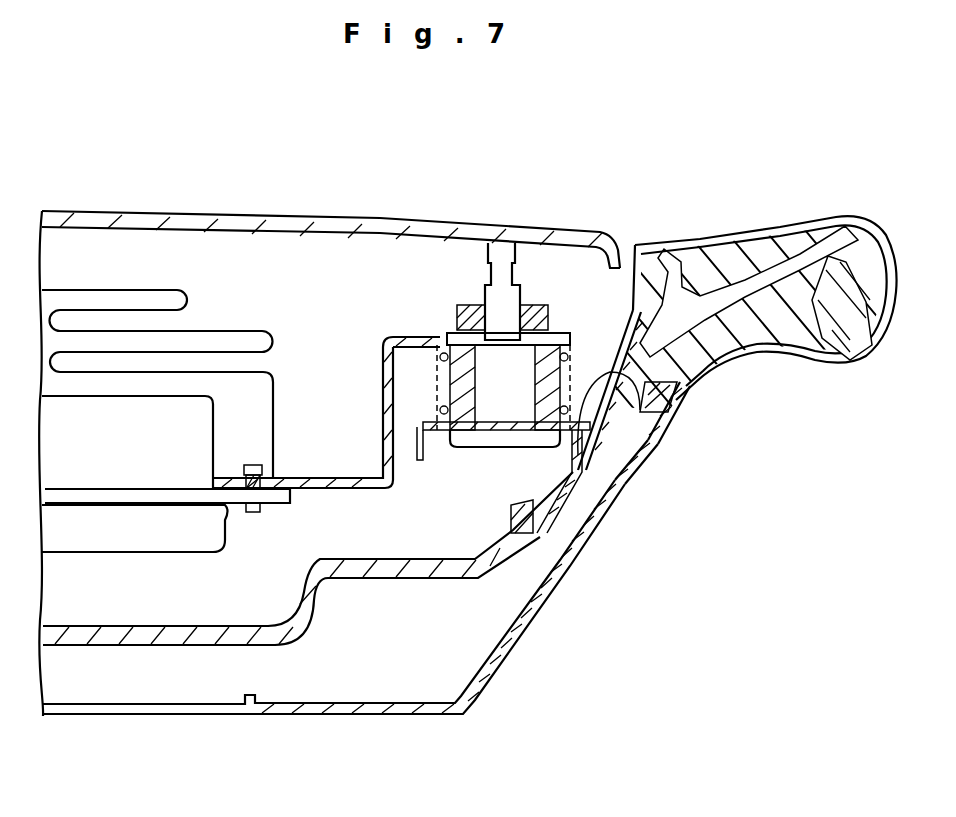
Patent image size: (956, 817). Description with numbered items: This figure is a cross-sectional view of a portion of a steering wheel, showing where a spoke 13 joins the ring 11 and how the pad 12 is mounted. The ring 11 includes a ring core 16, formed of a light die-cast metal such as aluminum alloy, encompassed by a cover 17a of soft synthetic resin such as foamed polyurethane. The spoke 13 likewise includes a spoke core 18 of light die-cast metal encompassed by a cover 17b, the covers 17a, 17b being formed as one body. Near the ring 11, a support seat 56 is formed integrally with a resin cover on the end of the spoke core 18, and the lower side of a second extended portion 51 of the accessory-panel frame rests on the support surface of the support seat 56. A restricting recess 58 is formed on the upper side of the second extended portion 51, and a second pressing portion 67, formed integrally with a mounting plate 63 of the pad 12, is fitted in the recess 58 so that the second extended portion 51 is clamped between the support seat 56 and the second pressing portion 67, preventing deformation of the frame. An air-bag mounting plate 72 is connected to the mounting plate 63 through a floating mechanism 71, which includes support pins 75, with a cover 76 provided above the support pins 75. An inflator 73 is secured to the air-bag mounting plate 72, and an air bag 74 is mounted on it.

The ring 11 is at (756, 230).
The pad 12 is at (245, 212).
The spoke 13 is at (459, 589).
The ring core 16 is at (860, 340).
The cover 17a is at (844, 226).
The cover 17b is at (741, 353).
The spoke core 18 is at (390, 580).
The second extended portion 51 is at (643, 457).
The support seat 56 is at (571, 458).
The restricting recess 58 is at (618, 497).
The mounting plate 63 is at (437, 442).
The second pressing portion 67 is at (660, 425).
The floating mechanism 71 is at (375, 325).
The air-bag mounting plate 72 is at (340, 470).
The inflator 73 is at (112, 550).
The air bag 74 is at (163, 288).
The support pin 75 is at (490, 300).
The cover 76 is at (441, 222).